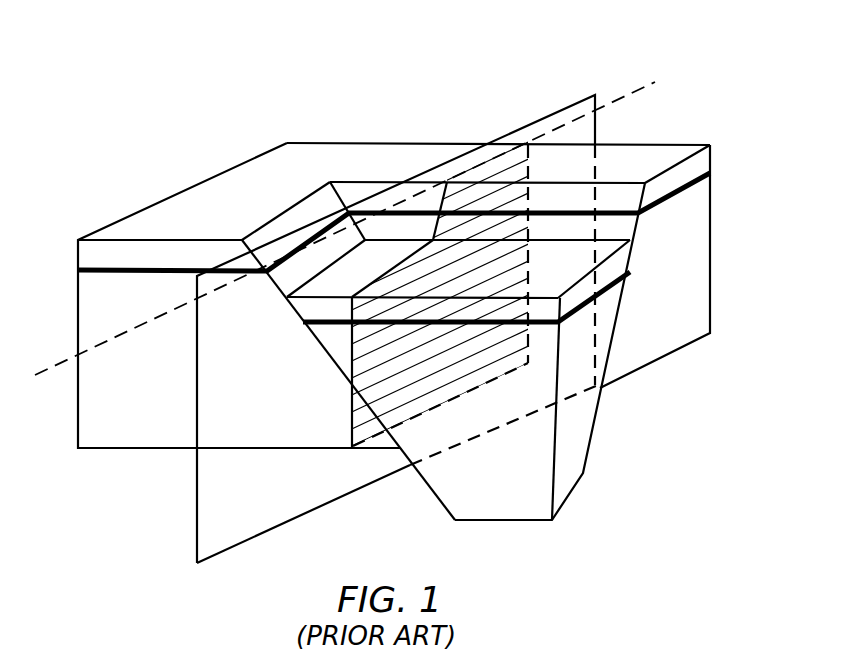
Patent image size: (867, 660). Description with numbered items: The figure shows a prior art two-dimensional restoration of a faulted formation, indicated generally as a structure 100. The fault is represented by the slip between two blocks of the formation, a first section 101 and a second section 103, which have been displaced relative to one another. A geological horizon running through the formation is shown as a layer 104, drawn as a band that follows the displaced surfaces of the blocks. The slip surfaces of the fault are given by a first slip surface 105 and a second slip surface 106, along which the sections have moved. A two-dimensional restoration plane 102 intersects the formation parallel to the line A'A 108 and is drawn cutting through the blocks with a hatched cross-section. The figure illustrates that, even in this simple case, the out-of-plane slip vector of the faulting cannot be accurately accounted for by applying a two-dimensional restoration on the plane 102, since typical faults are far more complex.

The prior art trench structure 100 is at (740, 80).
The section 101 is at (684, 341).
The 2D plane 102 is at (537, 131).
The section 103 is at (563, 491).
The layer 104 is at (710, 178).
The slip surface 105 is at (294, 217).
The slip surface 106 is at (403, 202).
The line A'A 108 is at (620, 102).